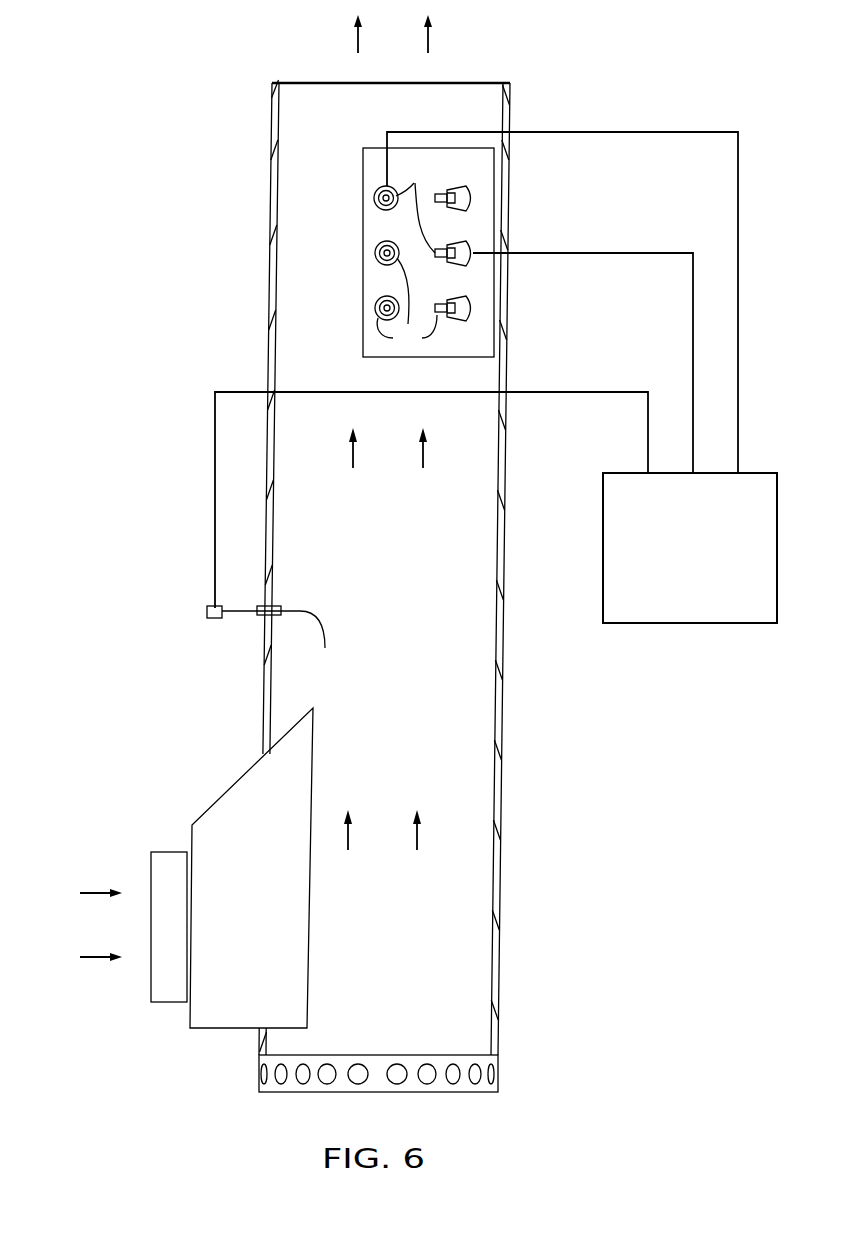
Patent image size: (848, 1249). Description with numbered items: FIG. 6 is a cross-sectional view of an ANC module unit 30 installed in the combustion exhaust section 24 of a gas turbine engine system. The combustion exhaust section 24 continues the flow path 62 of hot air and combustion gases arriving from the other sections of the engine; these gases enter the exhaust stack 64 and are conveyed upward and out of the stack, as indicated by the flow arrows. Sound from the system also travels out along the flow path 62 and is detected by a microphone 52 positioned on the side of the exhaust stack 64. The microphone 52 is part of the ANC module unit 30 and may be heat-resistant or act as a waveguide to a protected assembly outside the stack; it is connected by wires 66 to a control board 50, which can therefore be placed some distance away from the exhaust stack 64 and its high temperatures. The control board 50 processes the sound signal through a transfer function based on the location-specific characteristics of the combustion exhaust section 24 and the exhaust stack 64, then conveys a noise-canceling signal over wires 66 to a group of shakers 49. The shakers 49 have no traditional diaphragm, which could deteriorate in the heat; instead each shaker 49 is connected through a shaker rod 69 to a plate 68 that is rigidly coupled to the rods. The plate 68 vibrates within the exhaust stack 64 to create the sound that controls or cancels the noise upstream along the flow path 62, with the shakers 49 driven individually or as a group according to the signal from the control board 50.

The combustion exhaust section 24 is at (152, 158).
The ANC module unit 30 is at (684, 704).
The shaker 49 is at (470, 243).
The control board 50 is at (707, 623).
The microphone 52 is at (328, 637).
The flow path 62 is at (98, 892).
The exhaust stack 64 is at (502, 832).
The wires 66 is at (565, 131).
The plate 68 is at (473, 328).
The shaker rod 69 is at (437, 196).